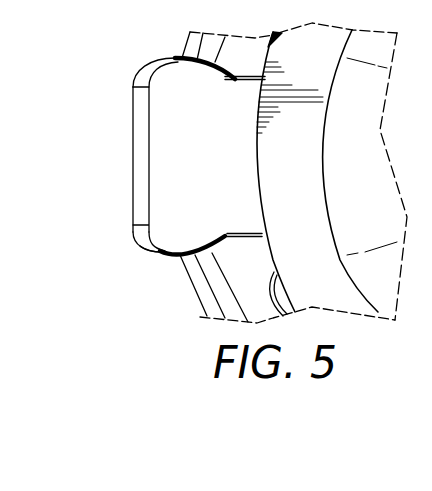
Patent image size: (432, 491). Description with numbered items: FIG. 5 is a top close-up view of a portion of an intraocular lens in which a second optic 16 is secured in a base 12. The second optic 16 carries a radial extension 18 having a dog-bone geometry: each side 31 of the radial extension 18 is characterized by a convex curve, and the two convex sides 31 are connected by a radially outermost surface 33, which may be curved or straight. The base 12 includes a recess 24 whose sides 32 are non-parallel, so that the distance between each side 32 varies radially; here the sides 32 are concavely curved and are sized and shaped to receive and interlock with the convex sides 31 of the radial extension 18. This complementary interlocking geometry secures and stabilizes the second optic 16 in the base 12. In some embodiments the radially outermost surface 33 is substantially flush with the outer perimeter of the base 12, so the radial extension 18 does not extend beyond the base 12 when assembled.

The base 12 is at (188, 40).
The second optic 16 is at (274, 157).
The radial extension 18 is at (133, 140).
The recess 24 is at (182, 58).
The side of extension 31 is at (167, 255).
The side of recess 32 is at (210, 243).
The radially outermost surface 33 is at (136, 207).